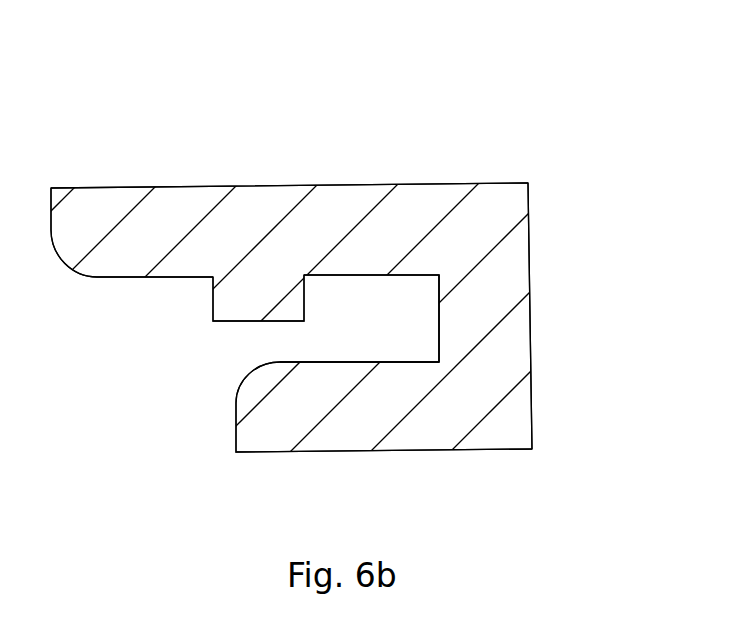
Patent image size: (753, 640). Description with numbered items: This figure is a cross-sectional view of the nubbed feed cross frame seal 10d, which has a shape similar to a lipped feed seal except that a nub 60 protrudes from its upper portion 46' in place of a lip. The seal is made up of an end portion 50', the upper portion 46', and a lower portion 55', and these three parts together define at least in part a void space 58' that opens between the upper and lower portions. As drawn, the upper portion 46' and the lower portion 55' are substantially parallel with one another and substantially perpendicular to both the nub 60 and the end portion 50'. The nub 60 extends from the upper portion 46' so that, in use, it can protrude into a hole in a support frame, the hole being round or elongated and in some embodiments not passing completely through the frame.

The nubbed feed cross frame seal 10d is at (524, 112).
The upper portion 46' is at (289, 190).
The end portion 50' is at (569, 316).
The lower portion 55' is at (384, 447).
The void space 58' is at (261, 345).
The nub 60 is at (187, 320).